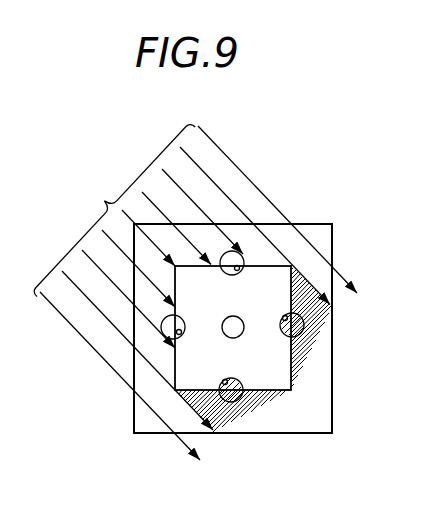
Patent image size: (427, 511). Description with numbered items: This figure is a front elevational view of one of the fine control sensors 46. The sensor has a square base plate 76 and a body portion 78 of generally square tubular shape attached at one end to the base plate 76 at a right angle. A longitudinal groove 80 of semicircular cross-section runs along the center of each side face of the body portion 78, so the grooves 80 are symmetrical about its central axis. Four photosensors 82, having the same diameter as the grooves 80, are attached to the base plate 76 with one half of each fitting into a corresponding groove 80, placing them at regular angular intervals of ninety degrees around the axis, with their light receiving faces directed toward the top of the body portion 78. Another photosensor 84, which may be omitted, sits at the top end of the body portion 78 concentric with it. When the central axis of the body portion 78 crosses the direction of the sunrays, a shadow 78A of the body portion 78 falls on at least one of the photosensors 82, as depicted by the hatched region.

The fine control sensor 46 is at (336, 399).
The base plate 76 is at (318, 224).
The body portion 78 is at (267, 265).
The shadow 78A is at (242, 408).
The longitudinal groove 80 is at (240, 270).
The photosensor 82 is at (182, 318).
The photosensor 84 is at (243, 333).